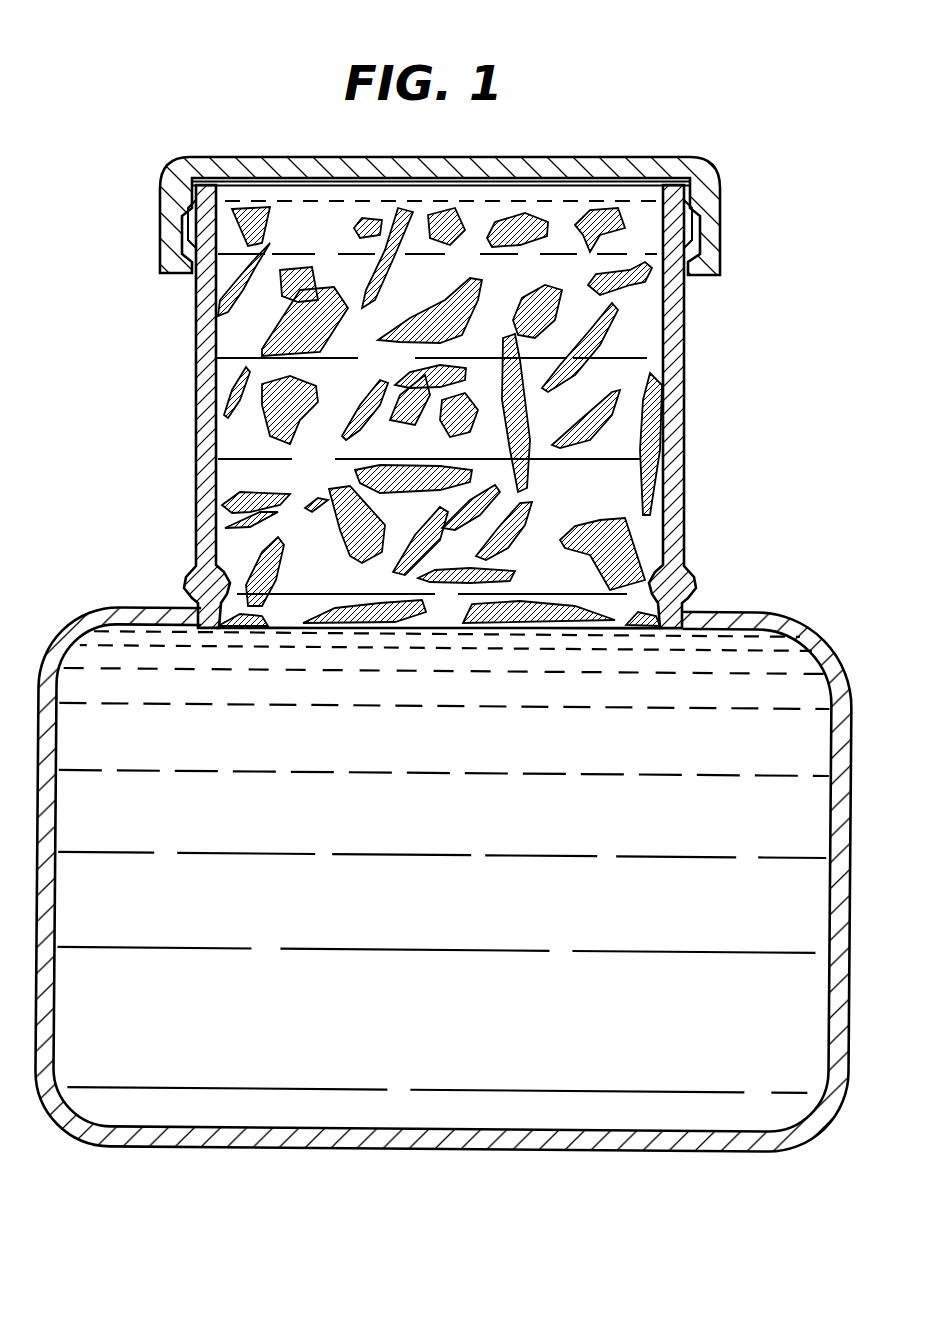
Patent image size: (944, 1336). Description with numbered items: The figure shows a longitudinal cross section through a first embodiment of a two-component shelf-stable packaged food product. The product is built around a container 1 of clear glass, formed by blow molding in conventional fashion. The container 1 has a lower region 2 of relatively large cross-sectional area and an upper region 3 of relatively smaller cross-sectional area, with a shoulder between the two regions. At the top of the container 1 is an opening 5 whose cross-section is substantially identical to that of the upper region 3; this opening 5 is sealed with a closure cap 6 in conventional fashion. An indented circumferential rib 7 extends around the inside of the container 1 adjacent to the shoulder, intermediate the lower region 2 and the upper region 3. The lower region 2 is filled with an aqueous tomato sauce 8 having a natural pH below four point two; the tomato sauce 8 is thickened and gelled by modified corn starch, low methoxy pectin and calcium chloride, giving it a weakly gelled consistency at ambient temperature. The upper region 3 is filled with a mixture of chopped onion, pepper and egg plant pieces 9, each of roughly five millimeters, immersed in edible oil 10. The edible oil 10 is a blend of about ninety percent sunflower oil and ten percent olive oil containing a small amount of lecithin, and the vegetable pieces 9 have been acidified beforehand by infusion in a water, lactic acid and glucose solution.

The container 1 is at (718, 555).
The lower region 2 is at (800, 623).
The upper region 3 is at (680, 378).
The opening 5 is at (718, 216).
The closure cap 6 is at (247, 165).
The indented circumferential rib 7 is at (630, 612).
The tomato sauce 8 is at (462, 839).
The vegetable pieces 9 is at (258, 330).
The edible oil 10 is at (248, 438).